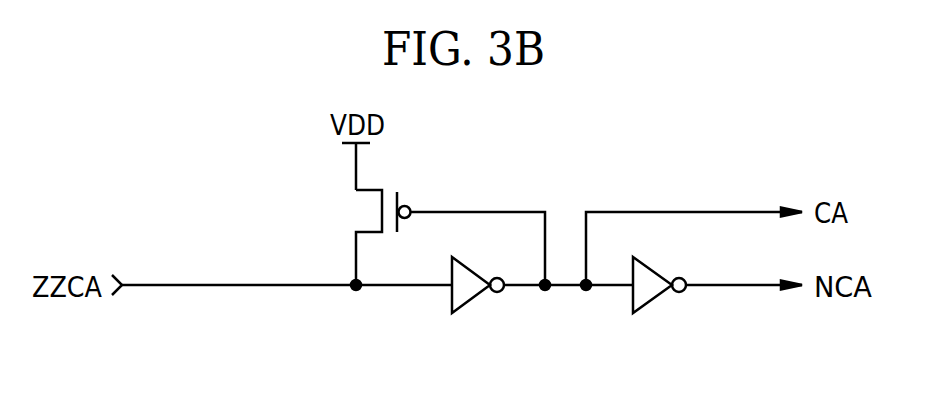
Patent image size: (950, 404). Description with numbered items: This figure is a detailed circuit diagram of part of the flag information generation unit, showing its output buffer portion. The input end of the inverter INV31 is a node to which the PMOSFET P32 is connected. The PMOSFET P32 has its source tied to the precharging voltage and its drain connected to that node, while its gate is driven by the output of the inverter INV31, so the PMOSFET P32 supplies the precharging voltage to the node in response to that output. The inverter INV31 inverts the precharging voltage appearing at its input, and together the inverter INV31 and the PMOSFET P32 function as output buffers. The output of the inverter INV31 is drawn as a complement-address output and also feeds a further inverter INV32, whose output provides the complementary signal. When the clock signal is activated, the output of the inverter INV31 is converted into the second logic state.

The PMOSFET P32 is at (362, 237).
The inverter INV31 is at (472, 299).
The second inverter INV32 is at (652, 299).